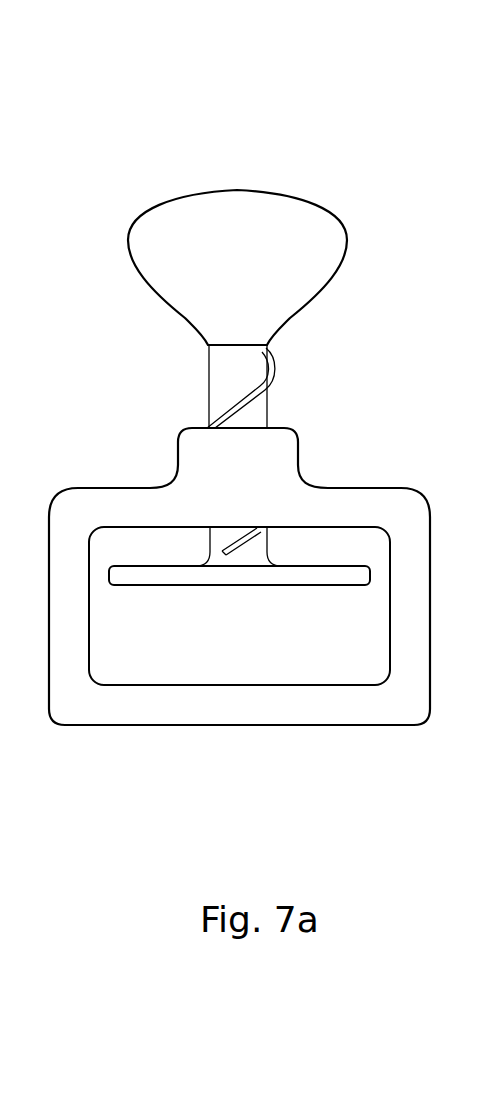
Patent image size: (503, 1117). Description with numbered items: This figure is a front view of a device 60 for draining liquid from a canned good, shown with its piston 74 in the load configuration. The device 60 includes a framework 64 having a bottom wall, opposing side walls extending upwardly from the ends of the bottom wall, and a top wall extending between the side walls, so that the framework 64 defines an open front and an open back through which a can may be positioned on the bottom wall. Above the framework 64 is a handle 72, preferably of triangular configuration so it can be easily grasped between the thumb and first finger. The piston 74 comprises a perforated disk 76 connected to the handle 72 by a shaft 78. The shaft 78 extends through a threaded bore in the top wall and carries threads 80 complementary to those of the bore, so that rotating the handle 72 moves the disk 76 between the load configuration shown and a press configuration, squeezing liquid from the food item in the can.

The device 60 is at (172, 90).
The handle 72 is at (286, 196).
The shaft 78 is at (218, 381).
The threads 80 is at (275, 373).
The framework 64 is at (95, 440).
The piston 74 is at (249, 612).
The perforated disk 76 is at (170, 580).